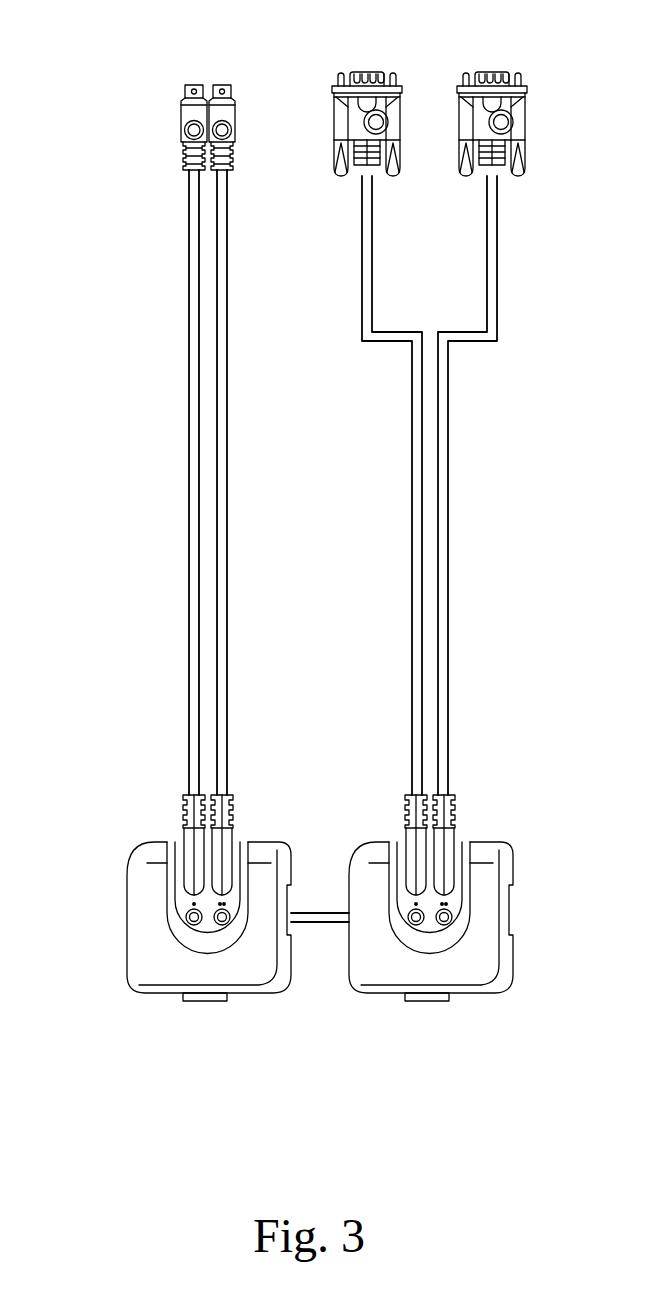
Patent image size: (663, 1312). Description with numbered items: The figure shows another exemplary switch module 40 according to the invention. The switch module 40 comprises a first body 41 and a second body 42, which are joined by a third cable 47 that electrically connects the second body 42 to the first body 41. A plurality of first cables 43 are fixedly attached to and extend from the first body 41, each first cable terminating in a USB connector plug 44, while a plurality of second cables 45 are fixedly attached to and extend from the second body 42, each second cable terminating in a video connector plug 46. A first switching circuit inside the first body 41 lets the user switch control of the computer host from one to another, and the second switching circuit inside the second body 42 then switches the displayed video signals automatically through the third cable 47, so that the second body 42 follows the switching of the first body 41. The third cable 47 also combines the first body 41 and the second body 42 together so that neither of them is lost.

The switch module 40 is at (150, 423).
The first body 41 is at (142, 908).
The second body 42 is at (497, 908).
The first cables 43 is at (223, 553).
The USB connector plug 44 is at (223, 84).
The second cables 45 is at (445, 553).
The video connector plug 46 is at (496, 84).
The third cable 47 is at (319, 919).